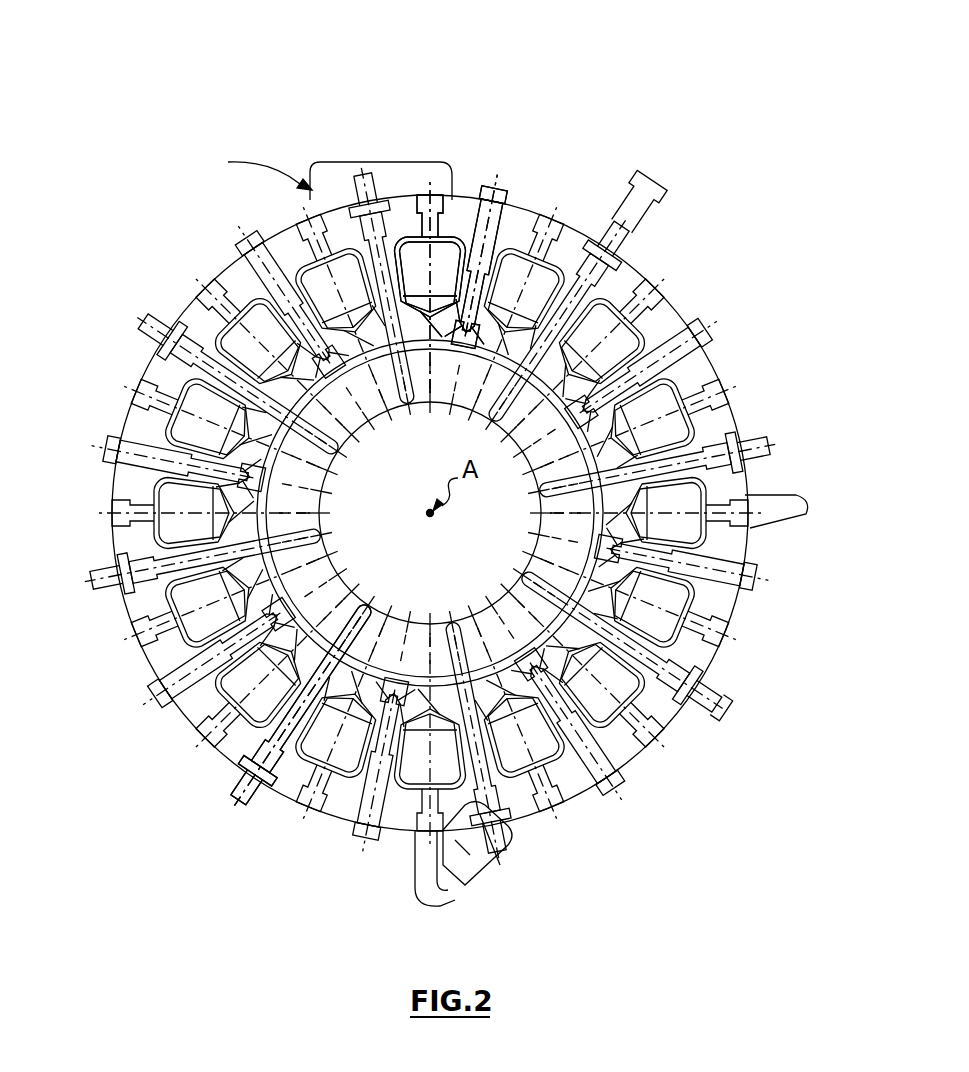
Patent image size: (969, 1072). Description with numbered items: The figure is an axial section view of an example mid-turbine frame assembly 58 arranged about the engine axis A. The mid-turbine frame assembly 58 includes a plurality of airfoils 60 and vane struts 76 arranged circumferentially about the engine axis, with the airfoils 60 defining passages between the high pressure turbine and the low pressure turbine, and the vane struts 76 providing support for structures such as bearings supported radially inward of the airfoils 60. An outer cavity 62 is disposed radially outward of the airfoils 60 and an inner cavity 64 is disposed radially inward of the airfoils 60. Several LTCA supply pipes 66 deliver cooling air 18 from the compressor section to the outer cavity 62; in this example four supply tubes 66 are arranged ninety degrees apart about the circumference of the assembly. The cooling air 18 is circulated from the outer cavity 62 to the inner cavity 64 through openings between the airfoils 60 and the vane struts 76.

The cooling air 18 is at (228, 152).
The mid-turbine frame assembly 58 is at (778, 147).
The airfoils 60 is at (296, 762).
The outer cavity 62 is at (475, 250).
The inner cavity 64 is at (487, 232).
The LTCA supply pipes 66 is at (402, 180).
The vane struts 76 is at (262, 252).